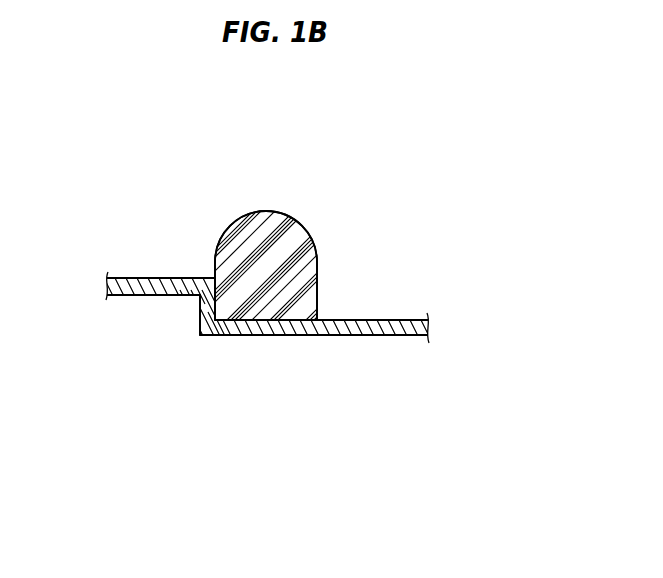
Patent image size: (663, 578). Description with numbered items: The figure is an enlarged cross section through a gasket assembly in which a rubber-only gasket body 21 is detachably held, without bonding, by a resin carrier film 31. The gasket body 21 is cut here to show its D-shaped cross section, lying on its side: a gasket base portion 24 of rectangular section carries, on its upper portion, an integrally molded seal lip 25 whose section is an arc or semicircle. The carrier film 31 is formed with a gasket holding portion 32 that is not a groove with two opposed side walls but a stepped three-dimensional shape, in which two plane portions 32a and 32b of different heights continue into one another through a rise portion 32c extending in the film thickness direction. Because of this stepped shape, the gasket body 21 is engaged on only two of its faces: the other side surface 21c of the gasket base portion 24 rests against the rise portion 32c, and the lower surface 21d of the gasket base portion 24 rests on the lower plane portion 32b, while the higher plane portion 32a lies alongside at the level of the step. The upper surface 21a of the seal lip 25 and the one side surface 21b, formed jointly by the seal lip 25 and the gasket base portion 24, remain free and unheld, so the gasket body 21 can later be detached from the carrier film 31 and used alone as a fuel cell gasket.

The gasket body 21 is at (323, 236).
The upper surface of the gasket body 21a is at (268, 210).
The one side surface of the gasket body 21b is at (318, 288).
The other side surface of the gasket body 21c is at (204, 312).
The lower surface of the gasket body 21d is at (263, 322).
The gasket base portion 24 is at (277, 297).
The seal lip 25 is at (260, 235).
The carrier film 31 is at (415, 344).
The gasket holding portion 32 is at (202, 344).
The plane portion 32a is at (172, 277).
The plane portion 32b is at (305, 328).
The rise portion 32c is at (202, 316).